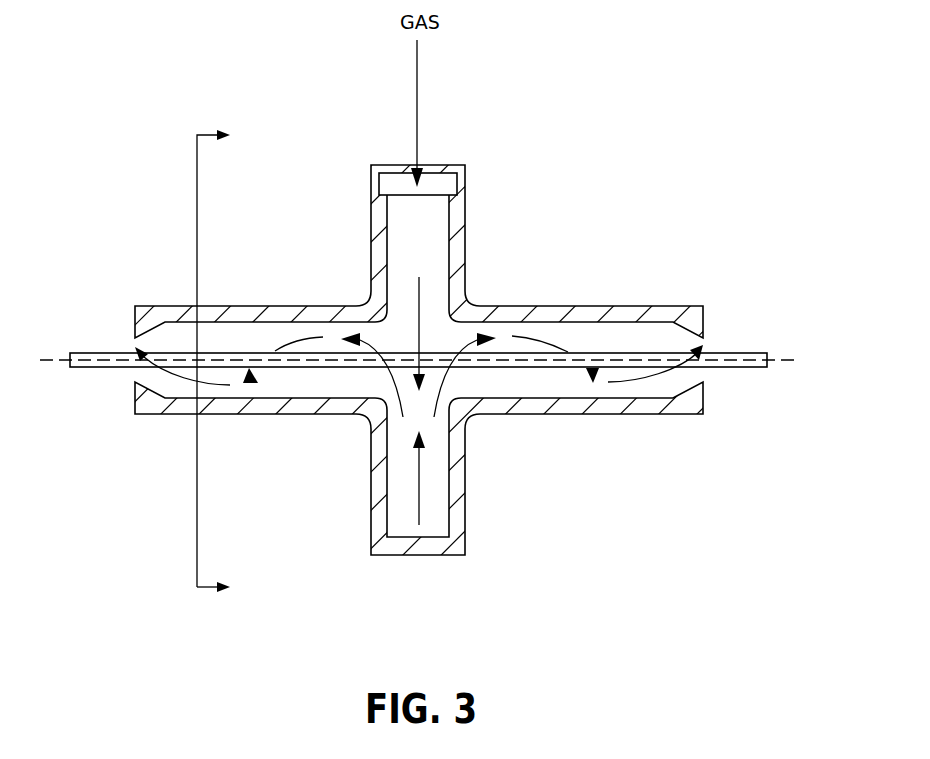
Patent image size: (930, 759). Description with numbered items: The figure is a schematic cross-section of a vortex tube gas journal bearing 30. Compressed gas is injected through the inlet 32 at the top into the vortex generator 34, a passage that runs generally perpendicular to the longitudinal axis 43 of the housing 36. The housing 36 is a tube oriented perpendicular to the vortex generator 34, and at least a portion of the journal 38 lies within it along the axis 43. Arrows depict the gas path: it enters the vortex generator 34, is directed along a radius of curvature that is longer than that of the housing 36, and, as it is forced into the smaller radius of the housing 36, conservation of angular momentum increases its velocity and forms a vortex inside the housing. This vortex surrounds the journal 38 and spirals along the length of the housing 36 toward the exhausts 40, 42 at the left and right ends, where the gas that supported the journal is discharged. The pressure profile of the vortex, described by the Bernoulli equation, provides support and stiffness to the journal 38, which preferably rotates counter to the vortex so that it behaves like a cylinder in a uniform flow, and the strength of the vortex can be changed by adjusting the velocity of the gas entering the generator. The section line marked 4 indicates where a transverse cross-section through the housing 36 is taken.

The vortex tube gas journal bearing 30 is at (136, 83).
The inlet 32 is at (448, 182).
The vortex generator 34 is at (465, 257).
The housing 36 is at (325, 305).
The journal 38 is at (102, 353).
The exhaust 40 is at (133, 377).
The exhaust 42 is at (703, 375).
The longitudinal axis 43 is at (782, 358).
The section line 4- 4 is at (213, 365).